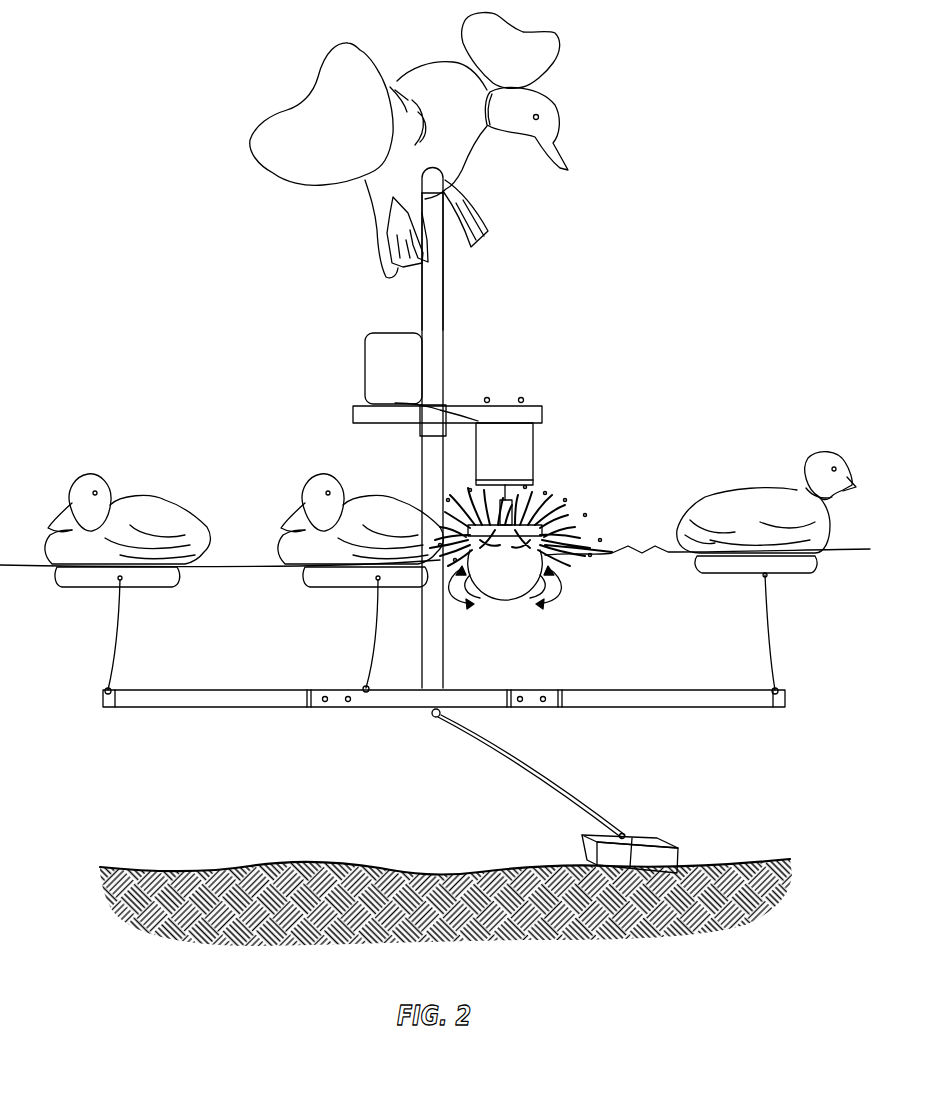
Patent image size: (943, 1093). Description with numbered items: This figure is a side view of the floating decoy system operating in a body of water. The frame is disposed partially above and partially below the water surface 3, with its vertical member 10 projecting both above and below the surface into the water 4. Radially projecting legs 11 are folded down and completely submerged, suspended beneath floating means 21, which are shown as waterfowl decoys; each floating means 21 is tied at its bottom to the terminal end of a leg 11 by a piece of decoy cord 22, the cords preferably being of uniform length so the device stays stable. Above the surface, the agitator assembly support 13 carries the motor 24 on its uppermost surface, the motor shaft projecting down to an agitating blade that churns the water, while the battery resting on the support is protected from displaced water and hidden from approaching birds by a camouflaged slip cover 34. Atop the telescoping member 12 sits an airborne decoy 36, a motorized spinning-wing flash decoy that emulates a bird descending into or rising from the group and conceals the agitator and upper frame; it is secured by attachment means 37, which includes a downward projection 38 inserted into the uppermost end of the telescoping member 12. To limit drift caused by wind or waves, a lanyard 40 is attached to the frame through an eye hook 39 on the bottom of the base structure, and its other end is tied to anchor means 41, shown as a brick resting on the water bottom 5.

The water surface 3 is at (278, 560).
The water 4 is at (637, 653).
The water bottom 5 is at (197, 870).
The vertical member 10 is at (444, 645).
The legs 11 is at (203, 710).
The telescoping member 12 is at (447, 250).
The agitator assembly support 13 is at (543, 412).
The floating means 21 is at (95, 474).
The decoy cord 22 is at (117, 625).
The motor 24 is at (534, 450).
The slip cover 34 is at (366, 362).
The airborne decoy 36 is at (440, 62).
The attachment means 37 is at (472, 174).
The projection 38 is at (460, 182).
The eye hook 39 is at (430, 712).
The lanyard 40 is at (512, 782).
The anchor means 41 is at (680, 855).